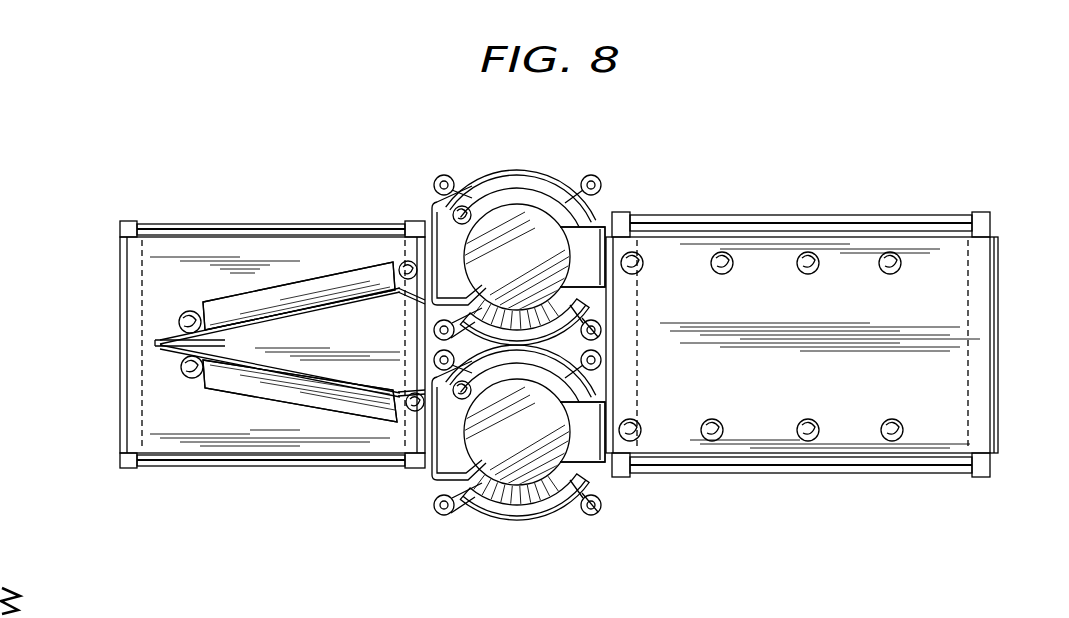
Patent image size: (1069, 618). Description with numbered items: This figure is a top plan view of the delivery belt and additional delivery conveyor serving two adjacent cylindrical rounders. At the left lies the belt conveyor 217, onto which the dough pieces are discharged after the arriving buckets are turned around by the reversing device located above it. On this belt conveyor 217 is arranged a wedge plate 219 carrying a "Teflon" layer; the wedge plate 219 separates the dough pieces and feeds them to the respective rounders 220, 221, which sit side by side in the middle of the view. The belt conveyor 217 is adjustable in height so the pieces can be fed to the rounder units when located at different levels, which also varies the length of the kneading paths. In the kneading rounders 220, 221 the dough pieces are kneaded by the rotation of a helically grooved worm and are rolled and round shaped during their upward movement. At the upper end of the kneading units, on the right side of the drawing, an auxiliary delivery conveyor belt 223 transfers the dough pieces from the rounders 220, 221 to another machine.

The belt conveyor 217 is at (148, 273).
The wedge plate 219 is at (285, 367).
The rounder 220 is at (527, 210).
The rounder 221 is at (518, 483).
The auxiliary delivery conveyor belt 223 is at (952, 350).